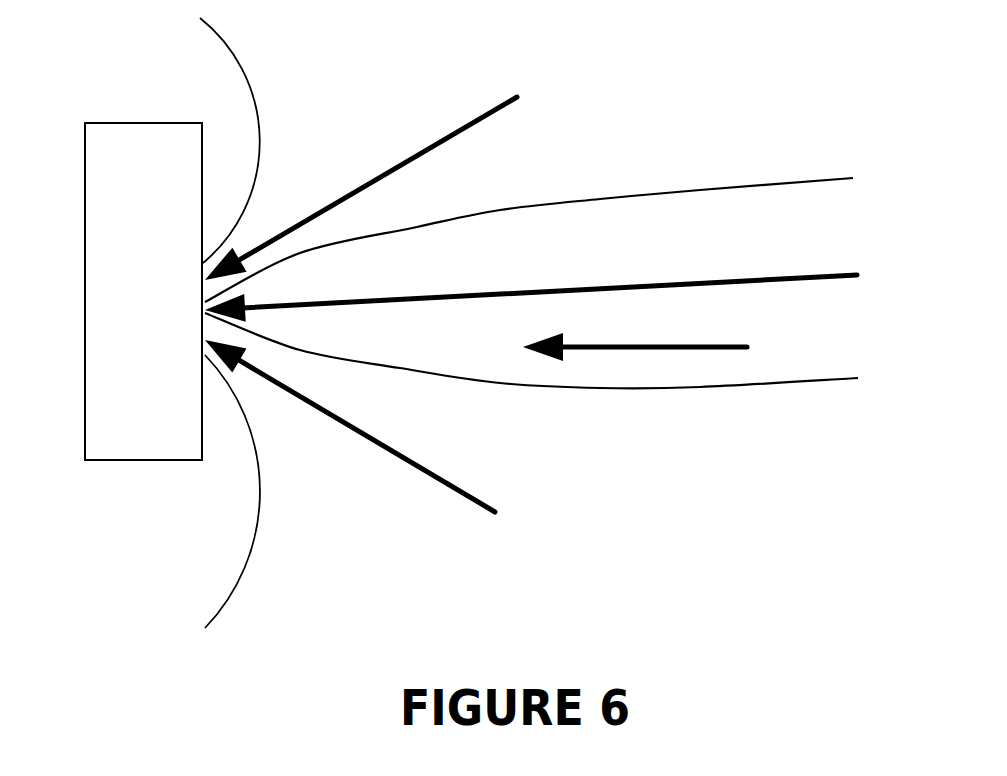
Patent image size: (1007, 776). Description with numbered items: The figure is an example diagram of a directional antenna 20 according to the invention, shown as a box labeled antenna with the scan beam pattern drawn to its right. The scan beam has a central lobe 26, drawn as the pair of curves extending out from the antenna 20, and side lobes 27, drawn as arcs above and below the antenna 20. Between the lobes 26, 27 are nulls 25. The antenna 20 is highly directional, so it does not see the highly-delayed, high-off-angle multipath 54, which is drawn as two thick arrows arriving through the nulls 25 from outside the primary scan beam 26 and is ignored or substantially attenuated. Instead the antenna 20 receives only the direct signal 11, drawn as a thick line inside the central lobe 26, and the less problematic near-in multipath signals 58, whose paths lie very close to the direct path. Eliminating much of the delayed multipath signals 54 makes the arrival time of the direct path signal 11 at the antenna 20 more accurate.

The directional antenna 20 is at (119, 291).
The side lobes 27 is at (213, 323).
The nulls 25 is at (334, 166).
The off-angle delayed multipath signals 54 is at (361, 301).
The central lobe 26 is at (841, 232).
The direct signal 11 is at (531, 284).
The near-in multipath signals 58 is at (635, 332).